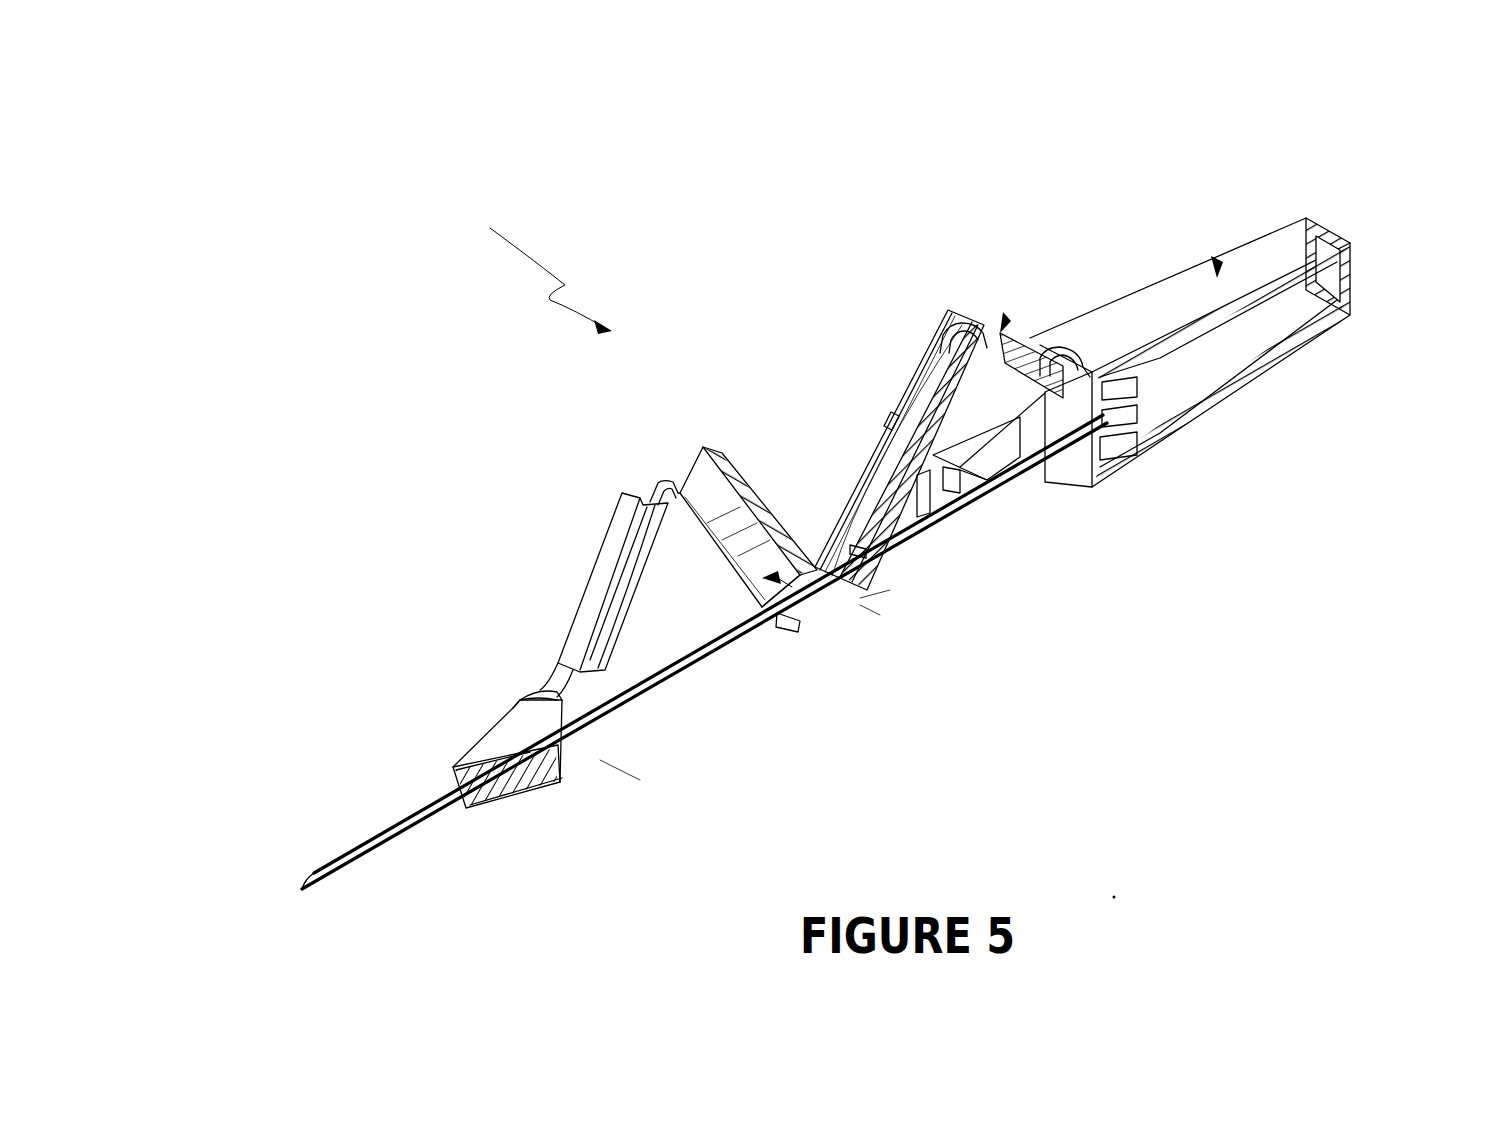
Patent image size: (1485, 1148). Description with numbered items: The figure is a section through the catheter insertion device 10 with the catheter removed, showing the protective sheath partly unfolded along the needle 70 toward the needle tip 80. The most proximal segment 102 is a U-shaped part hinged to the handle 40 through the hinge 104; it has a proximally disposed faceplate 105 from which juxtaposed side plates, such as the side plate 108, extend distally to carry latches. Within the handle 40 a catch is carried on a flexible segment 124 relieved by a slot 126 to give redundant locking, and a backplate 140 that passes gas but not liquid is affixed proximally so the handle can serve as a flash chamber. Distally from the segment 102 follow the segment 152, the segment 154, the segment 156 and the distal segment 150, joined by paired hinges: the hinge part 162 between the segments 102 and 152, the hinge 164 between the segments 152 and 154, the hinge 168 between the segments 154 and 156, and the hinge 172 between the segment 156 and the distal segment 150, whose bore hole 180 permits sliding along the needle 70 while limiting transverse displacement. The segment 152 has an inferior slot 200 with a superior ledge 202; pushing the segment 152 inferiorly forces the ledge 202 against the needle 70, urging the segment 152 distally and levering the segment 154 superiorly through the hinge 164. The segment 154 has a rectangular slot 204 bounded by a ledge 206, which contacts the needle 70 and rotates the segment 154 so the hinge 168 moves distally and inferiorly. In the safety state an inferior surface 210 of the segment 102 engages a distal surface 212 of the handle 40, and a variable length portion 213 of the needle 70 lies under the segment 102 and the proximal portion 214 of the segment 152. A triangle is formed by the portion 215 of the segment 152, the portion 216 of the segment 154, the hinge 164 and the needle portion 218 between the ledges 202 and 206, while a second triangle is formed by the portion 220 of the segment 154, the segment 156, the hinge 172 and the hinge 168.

The device 10 is at (533, 273).
The handle 40 is at (1240, 230).
The needle 70 is at (640, 780).
The needle tip 80 is at (310, 872).
The most proximal segment 102 is at (1236, 331).
The hinge 104 is at (1221, 306).
The faceplate 105 is at (1065, 320).
The side plate 108 is at (935, 345).
The flexible segment 124 is at (915, 520).
The slot 126 is at (967, 510).
The backplate 140 is at (1352, 255).
The distal segment 150 is at (455, 758).
The segment 152 is at (900, 368).
The segment 154 is at (800, 470).
The segment 156 is at (625, 555).
The hinge part 162 is at (985, 300).
The hinge 164 is at (795, 630).
The hinge 168 is at (650, 480).
The hinge 172 is at (545, 680).
The bore hole 180 is at (482, 753).
The slot 200 is at (845, 510).
The ledge 202 is at (870, 485).
The rectangular slot 204 is at (690, 652).
The ledge 206 is at (772, 652).
The inferiorly disposed surface 210 is at (1000, 542).
The distal surface 212 is at (1120, 500).
The variable length portion 213 is at (853, 607).
The proximal portion 214 is at (886, 420).
The portion 215 is at (853, 603).
The portion 216 is at (780, 647).
The variable portion 218 is at (420, 815).
The portion 220 is at (740, 548).